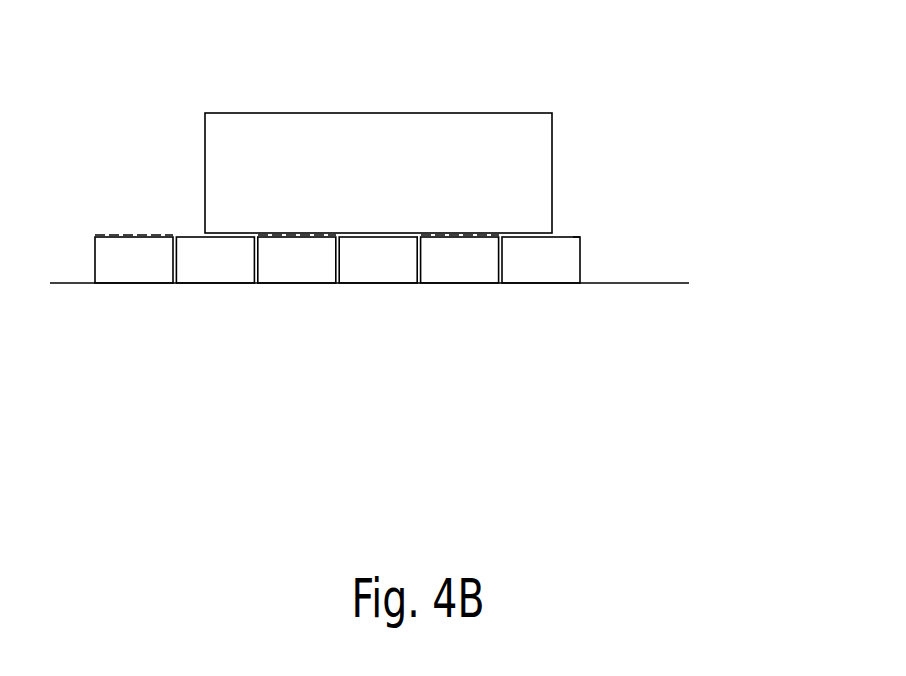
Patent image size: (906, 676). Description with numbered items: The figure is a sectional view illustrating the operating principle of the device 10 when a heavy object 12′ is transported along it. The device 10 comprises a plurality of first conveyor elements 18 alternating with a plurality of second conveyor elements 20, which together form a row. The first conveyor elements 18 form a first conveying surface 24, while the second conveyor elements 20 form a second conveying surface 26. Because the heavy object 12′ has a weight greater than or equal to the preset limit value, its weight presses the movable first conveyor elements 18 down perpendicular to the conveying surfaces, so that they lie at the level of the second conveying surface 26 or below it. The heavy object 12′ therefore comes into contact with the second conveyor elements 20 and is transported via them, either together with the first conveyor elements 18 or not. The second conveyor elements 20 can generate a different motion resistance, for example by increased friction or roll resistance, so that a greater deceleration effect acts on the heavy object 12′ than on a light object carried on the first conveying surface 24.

The device 10 is at (583, 416).
The heavy object 12′ is at (498, 135).
The first conveyor element 18 is at (115, 255).
The second conveyor element 20 is at (217, 255).
The first conveying surface 24 is at (573, 237).
The second conveying surface 26 is at (125, 233).